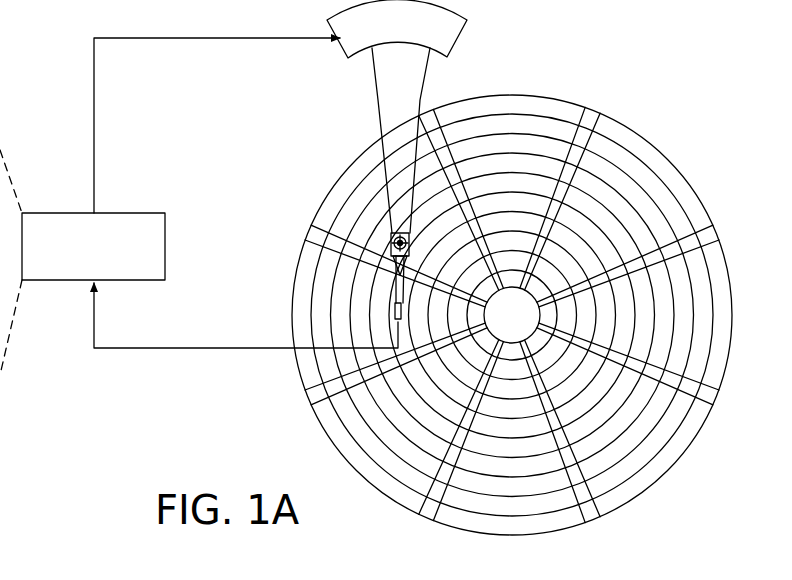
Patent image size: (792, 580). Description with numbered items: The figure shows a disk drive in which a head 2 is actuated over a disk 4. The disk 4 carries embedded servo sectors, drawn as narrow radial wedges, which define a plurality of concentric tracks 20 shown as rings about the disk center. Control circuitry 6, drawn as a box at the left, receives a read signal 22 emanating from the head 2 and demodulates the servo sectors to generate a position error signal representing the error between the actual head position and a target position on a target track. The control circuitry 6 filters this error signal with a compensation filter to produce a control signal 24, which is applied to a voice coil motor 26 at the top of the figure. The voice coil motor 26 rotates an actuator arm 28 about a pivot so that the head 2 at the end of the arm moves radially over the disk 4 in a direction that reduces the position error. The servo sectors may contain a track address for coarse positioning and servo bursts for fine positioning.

The head 2 is at (392, 318).
The disk 4 is at (662, 147).
The control circuitry 6 is at (128, 213).
The tracks 20 is at (510, 120).
The read signal 22 is at (205, 350).
The control signal 24 is at (96, 122).
The voice coil motor (VCM) 26 is at (347, 56).
The actuator arm 28 is at (378, 112).